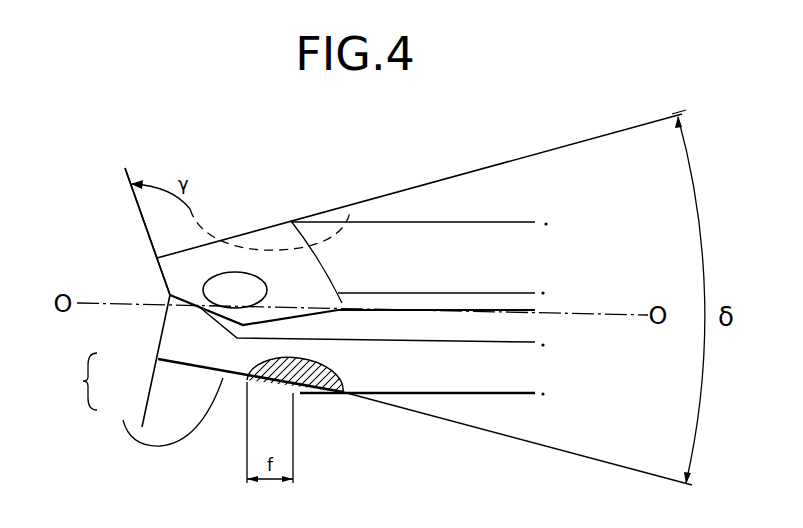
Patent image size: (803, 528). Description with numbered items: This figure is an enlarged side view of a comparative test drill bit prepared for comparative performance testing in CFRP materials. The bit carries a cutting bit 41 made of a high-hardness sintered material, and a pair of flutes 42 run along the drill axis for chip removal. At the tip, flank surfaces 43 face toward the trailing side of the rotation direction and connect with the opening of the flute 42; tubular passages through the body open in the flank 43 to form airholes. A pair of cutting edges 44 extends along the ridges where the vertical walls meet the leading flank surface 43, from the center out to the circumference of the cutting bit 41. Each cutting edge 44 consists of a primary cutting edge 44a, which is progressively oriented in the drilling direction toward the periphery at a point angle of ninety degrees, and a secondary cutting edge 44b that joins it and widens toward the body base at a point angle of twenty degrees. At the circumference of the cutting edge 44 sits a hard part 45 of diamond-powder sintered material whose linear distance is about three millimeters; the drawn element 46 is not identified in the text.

The cutting bit 41 is at (483, 247).
The flute 42 is at (478, 366).
The flank surface 43 is at (226, 257).
The cutting edge 44 is at (108, 297).
The primary cutting edge 44a is at (164, 276).
The secondary cutting edge 44b is at (197, 247).
The hard part 45 is at (272, 234).
The recess 46 is at (265, 291).